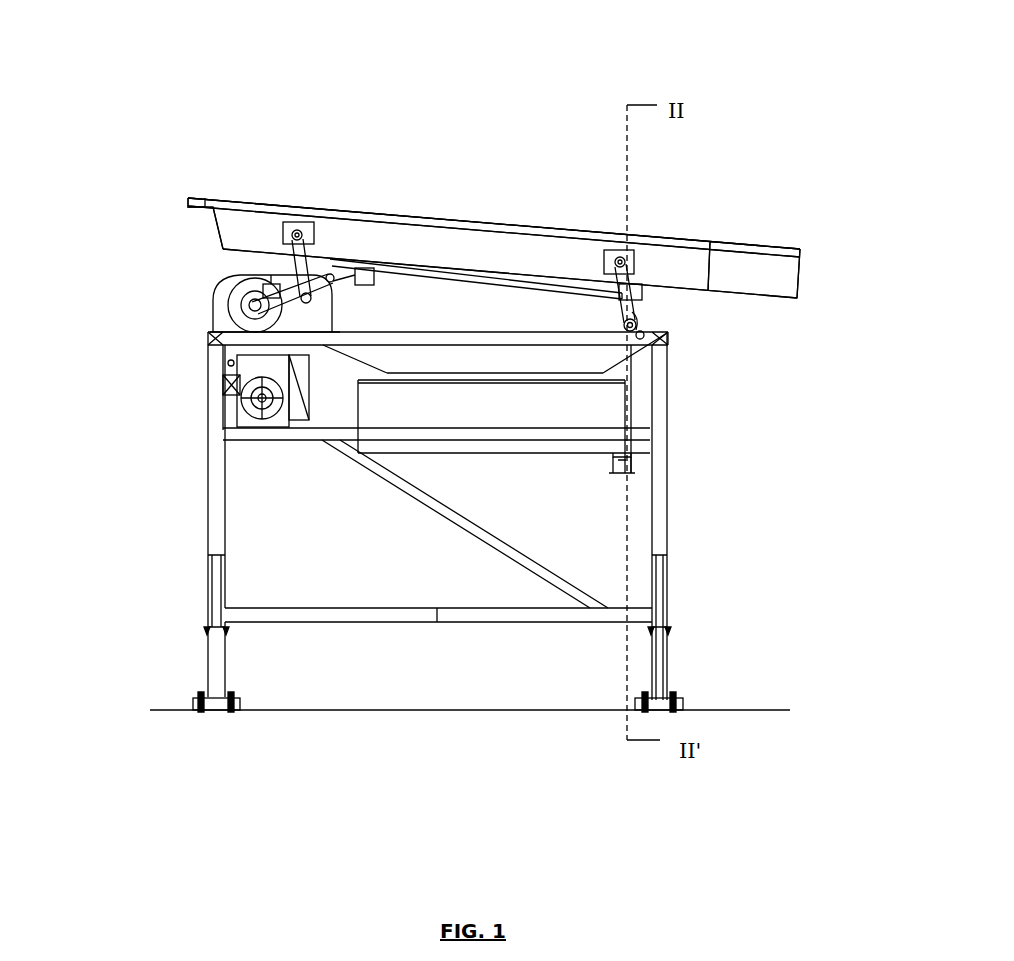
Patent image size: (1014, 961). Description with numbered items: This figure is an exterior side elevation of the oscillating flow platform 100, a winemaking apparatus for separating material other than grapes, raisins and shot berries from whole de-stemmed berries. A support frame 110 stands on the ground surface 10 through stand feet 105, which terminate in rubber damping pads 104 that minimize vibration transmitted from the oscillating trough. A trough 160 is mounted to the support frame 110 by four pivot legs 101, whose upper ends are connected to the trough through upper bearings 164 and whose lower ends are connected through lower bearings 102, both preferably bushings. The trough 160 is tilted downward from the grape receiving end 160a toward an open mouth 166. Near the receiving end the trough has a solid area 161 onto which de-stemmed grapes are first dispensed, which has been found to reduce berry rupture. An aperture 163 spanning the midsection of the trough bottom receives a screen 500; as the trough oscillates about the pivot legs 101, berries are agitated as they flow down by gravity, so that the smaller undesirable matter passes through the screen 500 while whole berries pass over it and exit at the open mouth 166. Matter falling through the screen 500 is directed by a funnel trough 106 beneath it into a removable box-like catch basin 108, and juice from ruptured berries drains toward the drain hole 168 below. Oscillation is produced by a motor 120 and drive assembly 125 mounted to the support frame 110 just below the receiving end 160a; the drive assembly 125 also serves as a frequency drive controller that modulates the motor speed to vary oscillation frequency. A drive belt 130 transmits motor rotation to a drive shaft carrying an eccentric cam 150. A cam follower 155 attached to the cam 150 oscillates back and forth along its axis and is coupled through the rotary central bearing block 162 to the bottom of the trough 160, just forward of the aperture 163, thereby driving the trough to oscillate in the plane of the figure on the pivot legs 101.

The ground surface 10 is at (737, 706).
The oscillating flow platform 100 is at (125, 157).
The pivot legs 101 is at (222, 272).
The lower bearings 102 is at (325, 300).
The rubber damping pads 104 is at (690, 700).
The stand feet 105 is at (635, 696).
The funnel trough 106 is at (438, 352).
The catch basin 108 is at (436, 409).
The support frame 110 is at (688, 520).
The motor 120 is at (238, 426).
The drive assembly 125 is at (155, 320).
The drive belt 130 is at (226, 366).
The cam 150 is at (320, 345).
The cam follower 155 is at (235, 283).
The trough 160 is at (508, 202).
The grape receiving end 160a is at (268, 162).
The solid area 161 is at (278, 196).
The central bearing block 162 is at (365, 290).
The aperture 163 is at (448, 264).
The upper bearings 164 is at (260, 200).
The open mouth 166 is at (805, 270).
The drain hole 168 is at (600, 466).
The screen 500 is at (470, 283).